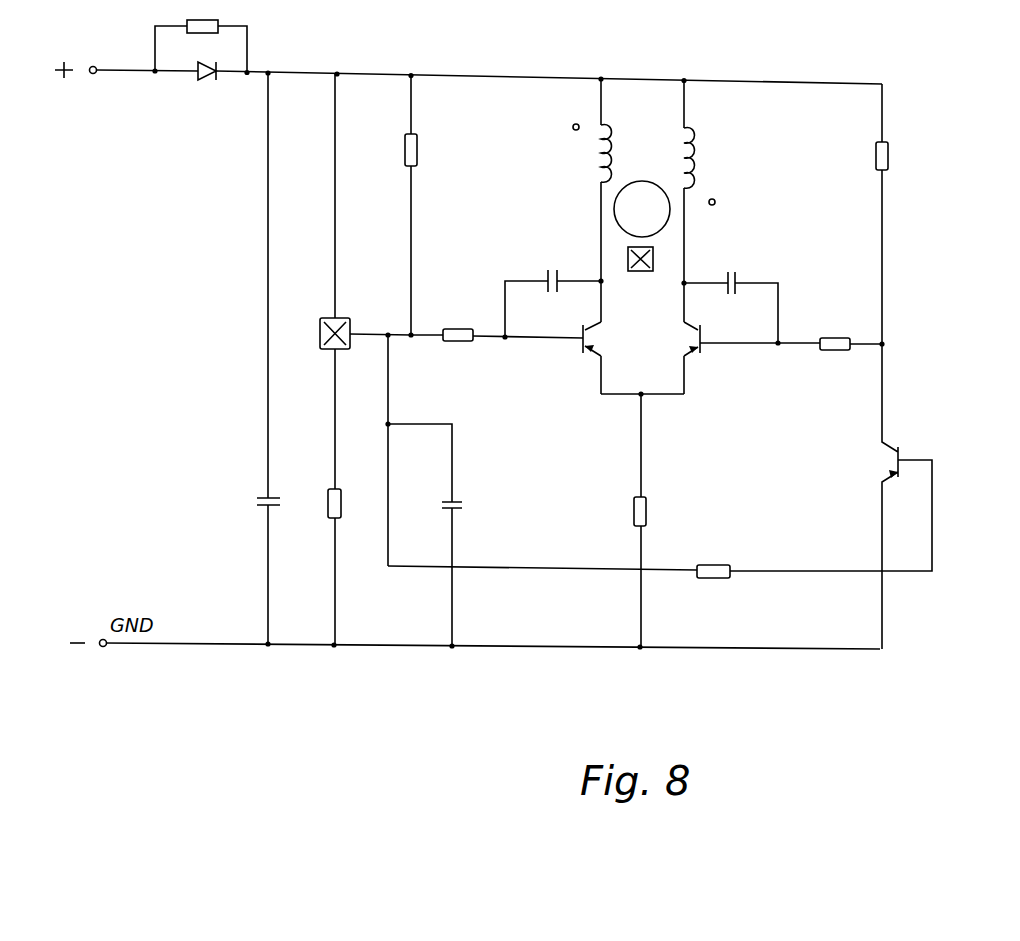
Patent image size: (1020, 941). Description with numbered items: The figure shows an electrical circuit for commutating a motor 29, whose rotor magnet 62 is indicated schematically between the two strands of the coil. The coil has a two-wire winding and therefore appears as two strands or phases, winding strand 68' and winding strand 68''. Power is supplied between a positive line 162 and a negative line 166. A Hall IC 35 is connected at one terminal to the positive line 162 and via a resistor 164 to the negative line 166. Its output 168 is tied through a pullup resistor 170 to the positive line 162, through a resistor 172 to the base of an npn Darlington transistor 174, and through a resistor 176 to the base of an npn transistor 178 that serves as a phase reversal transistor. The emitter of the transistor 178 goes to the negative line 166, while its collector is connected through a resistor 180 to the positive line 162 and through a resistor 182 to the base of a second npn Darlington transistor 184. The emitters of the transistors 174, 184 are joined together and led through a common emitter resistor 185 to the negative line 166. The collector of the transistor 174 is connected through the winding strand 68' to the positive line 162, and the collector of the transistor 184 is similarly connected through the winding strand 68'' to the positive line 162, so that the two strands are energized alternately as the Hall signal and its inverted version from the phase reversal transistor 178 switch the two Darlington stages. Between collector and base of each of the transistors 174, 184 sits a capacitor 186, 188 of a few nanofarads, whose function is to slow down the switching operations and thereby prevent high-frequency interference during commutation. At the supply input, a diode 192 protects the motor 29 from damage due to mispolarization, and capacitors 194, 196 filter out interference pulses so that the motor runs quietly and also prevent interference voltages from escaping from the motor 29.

The positive line 162 is at (462, 77).
The negative line 166 is at (531, 650).
The diode 192 is at (206, 84).
The capacitor 194 is at (262, 492).
The Hall IC 35 is at (349, 318).
The output 168 is at (390, 338).
The pullup resistor 170 is at (418, 150).
The resistor 172 is at (462, 328).
The resistor 164 is at (342, 520).
The capacitor 196 is at (466, 505).
The capacitor 186 is at (546, 276).
The npn Darlington transistor 174 is at (572, 345).
The npn Darlington transistor 184 is at (702, 350).
The capacitor 188 is at (742, 282).
The resistor 182 is at (836, 333).
The common emitter resistor 185 is at (647, 506).
The resistor 176 is at (712, 566).
The npn transistor 178 is at (893, 452).
The resistor 180 is at (875, 158).
The motor 29 is at (654, 159).
The winding strand 68' is at (575, 131).
The winding strand 68'' is at (727, 143).
The rotor magnet 62 is at (670, 224).